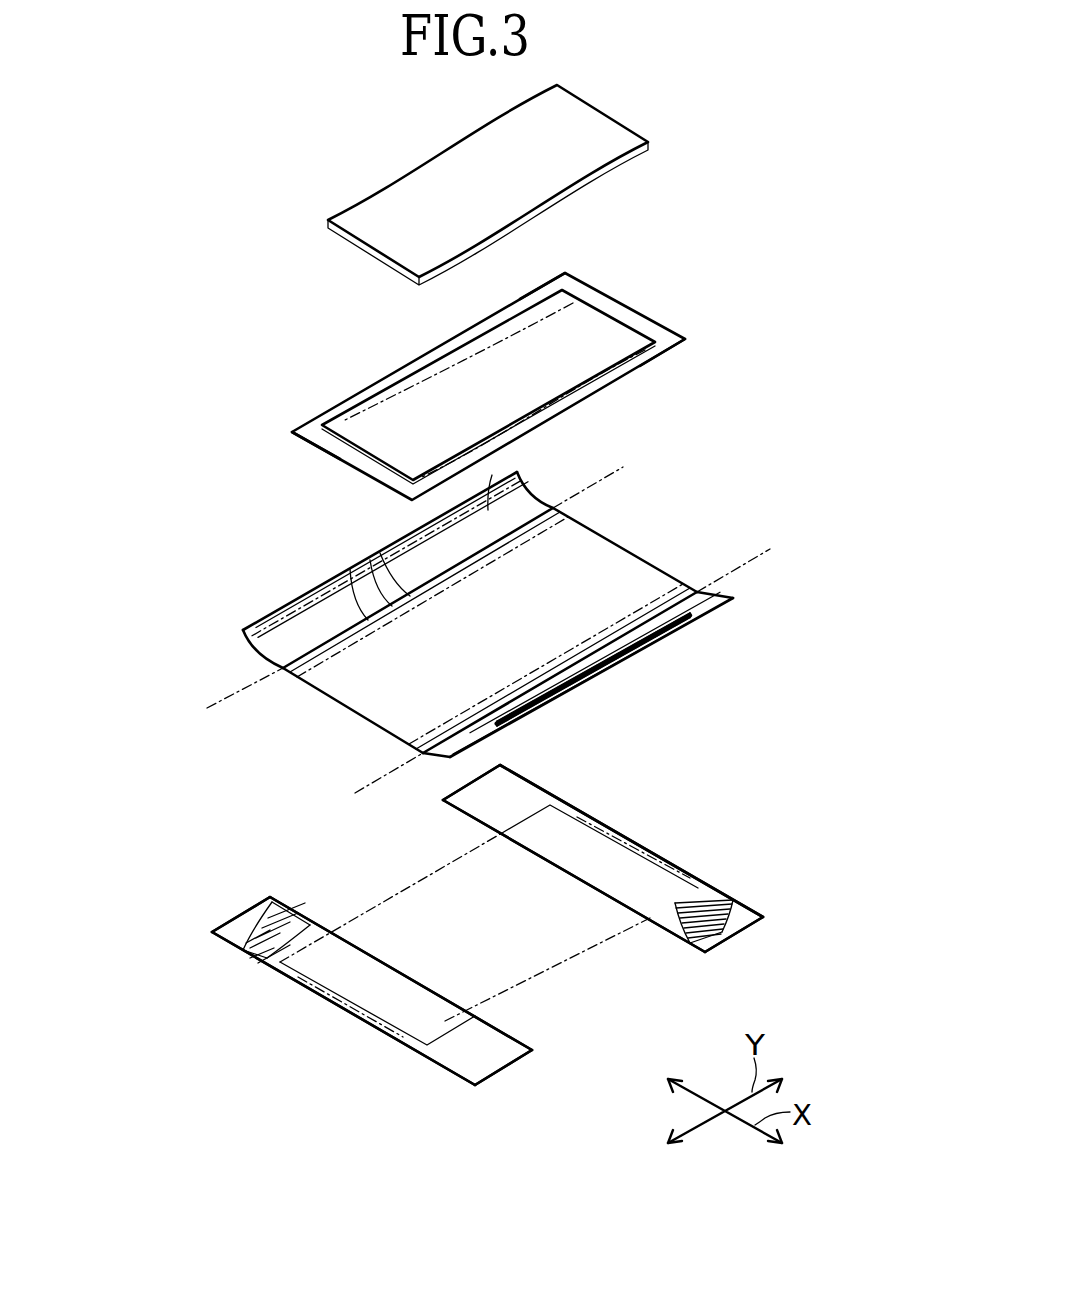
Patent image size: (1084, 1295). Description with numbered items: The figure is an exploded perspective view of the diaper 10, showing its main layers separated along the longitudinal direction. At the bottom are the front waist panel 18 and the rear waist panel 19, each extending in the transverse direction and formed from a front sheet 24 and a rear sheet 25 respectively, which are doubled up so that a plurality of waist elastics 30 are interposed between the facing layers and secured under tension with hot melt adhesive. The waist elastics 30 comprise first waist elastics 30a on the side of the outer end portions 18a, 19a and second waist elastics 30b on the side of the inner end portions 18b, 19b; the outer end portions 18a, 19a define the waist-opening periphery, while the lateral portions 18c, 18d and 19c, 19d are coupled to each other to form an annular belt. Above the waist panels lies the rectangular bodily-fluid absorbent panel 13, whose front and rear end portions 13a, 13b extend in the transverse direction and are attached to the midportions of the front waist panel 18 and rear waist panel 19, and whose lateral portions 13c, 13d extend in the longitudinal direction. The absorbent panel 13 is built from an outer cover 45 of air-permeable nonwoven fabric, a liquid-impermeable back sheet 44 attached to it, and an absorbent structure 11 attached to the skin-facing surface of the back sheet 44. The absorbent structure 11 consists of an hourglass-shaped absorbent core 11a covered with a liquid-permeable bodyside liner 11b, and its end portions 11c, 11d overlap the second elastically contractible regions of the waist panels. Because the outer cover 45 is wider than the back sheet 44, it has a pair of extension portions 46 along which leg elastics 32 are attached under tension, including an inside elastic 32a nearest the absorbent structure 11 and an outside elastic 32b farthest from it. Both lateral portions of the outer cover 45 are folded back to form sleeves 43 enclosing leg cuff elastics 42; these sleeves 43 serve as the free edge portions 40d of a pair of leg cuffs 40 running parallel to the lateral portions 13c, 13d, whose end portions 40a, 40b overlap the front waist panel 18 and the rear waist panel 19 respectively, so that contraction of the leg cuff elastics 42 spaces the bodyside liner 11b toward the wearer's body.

The diaper 10 is at (785, 112).
The absorbent structure 11 is at (477, 376).
The absorbent core 11a is at (603, 137).
The bodyside liner 11b is at (587, 353).
The end portion of absorbent structure 11c is at (340, 455).
The end portion of absorbent structure 11d is at (593, 308).
The back sheet 44 is at (623, 309).
The bodily-fluid absorbent panel 13 is at (469, 624).
The front end portion of absorbent panel 13a is at (345, 703).
The rear end portion of absorbent panel 13b is at (603, 533).
The lateral portion of absorbent panel 13c is at (280, 670).
The lateral portion of absorbent panel 13d is at (430, 757).
The outer cover 45 is at (622, 572).
The extension portions 46 is at (487, 470).
The leg cuffs 40 is at (469, 595).
The end portion of leg cuff 40a is at (258, 653).
The end portion of leg cuff 40b is at (535, 487).
The free edge portions 40d is at (424, 658).
The leg cuff elastics 42 is at (427, 518).
The sleeves 43 is at (268, 618).
The leg elastics 32 is at (330, 554).
The inside elastic 32a is at (350, 615).
The outside elastic 32b is at (337, 630).
The front waist panel 18 is at (506, 985).
The outer end portion of front waist panel 18a is at (323, 997).
The inner end portion of front waist panel 18b is at (397, 969).
The lateral portion of front waist panel 18c is at (250, 913).
The lateral portion of front waist panel 18d is at (510, 1066).
The front sheet 24 is at (467, 1067).
The rear waist panel 19 is at (601, 880).
The outer end portion of rear waist panel 19a is at (627, 836).
The inner end portion of rear waist panel 19b is at (551, 862).
The lateral portion of rear waist panel 19c is at (460, 786).
The lateral portion of rear waist panel 19d is at (737, 935).
The rear sheet 25 is at (580, 837).
The waist elastics 30 is at (506, 920).
The first waist elastics 30a is at (247, 953).
The second waist elastics 30b is at (290, 905).